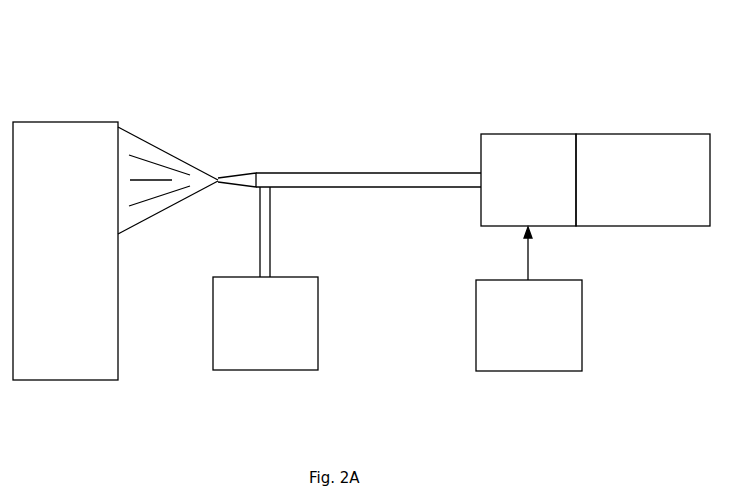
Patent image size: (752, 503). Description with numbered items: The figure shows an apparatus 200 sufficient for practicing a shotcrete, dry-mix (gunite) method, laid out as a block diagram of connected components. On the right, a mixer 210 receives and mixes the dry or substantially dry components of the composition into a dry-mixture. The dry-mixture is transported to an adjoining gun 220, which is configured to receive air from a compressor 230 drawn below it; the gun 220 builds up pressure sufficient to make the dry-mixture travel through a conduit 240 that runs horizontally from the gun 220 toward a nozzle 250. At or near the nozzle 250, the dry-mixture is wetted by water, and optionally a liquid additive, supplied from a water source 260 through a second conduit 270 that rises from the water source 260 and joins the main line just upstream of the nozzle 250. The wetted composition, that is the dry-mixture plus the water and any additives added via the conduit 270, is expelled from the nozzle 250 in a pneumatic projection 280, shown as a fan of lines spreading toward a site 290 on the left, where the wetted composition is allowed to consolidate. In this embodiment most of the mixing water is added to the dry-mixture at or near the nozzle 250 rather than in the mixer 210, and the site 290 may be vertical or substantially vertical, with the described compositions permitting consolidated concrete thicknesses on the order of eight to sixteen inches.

The apparatus 200 is at (487, 91).
The mixer 210 is at (699, 217).
The gun 220 is at (559, 217).
The compressor 230 is at (574, 360).
The conduit 240 is at (368, 172).
The nozzle 250 is at (241, 172).
The water source 260 is at (312, 360).
The conduit 270 is at (272, 235).
The pneumatic projection 280 is at (180, 152).
The site 290 is at (108, 148).